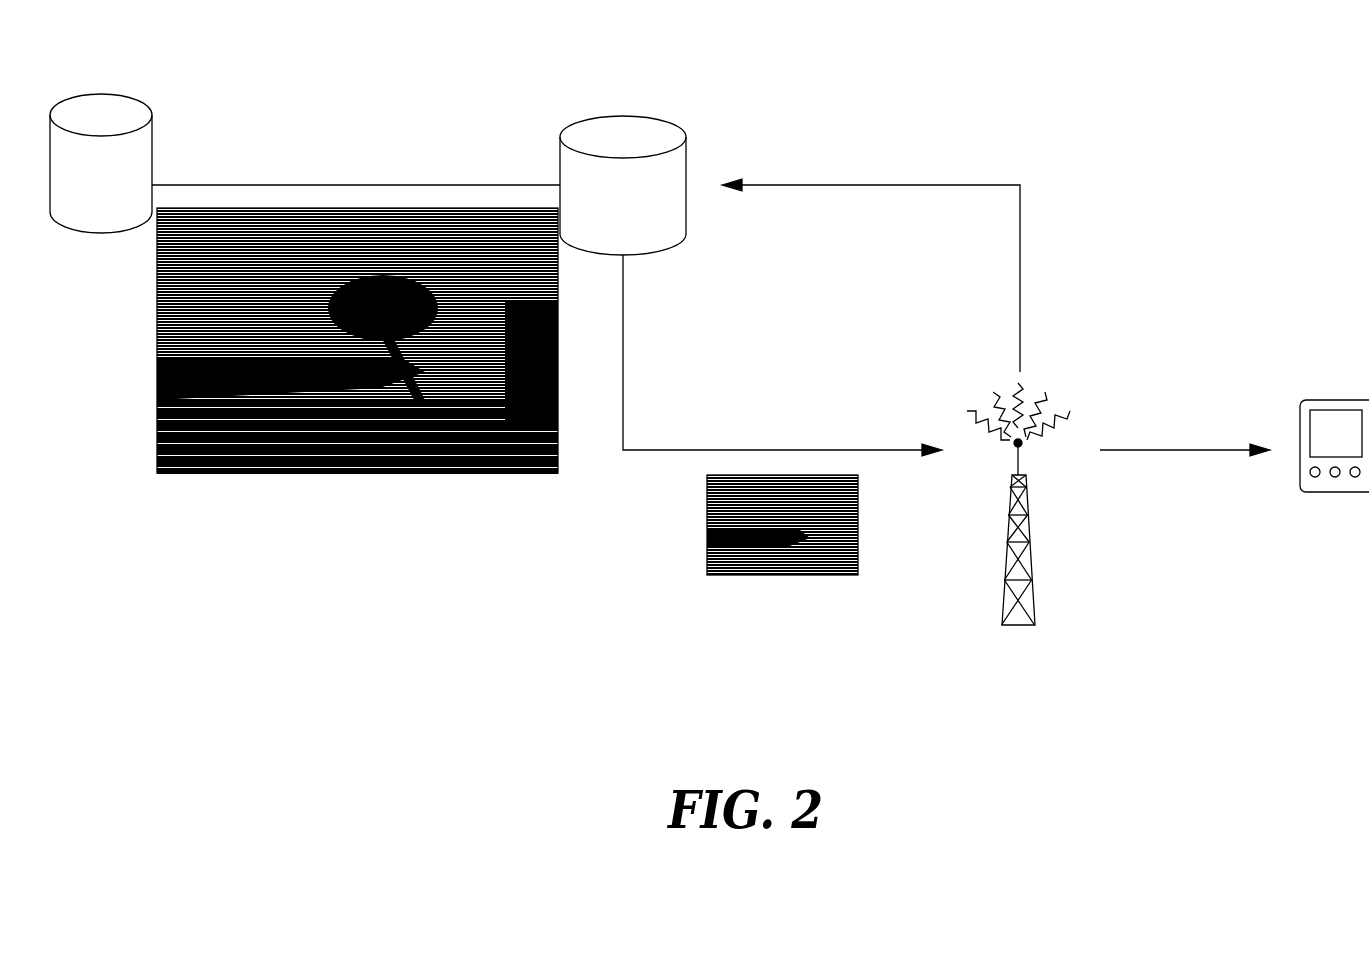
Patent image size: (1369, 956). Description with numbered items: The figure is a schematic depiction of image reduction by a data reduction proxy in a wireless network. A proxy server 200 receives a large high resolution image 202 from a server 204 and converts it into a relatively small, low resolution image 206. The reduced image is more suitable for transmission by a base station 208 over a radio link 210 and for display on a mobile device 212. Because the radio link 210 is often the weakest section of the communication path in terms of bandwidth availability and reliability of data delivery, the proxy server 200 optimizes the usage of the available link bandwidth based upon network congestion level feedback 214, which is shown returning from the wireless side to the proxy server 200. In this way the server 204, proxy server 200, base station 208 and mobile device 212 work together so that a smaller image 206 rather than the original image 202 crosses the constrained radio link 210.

The proxy server 200 is at (643, 98).
The large high resolution image 202 is at (485, 472).
The server 204 is at (110, 92).
The small low resolution image 206 is at (802, 573).
The base station 208 is at (1033, 530).
The radio link 210 is at (1185, 455).
The mobile device 212 is at (1332, 400).
The network congestion level feedback 214 is at (1020, 285).